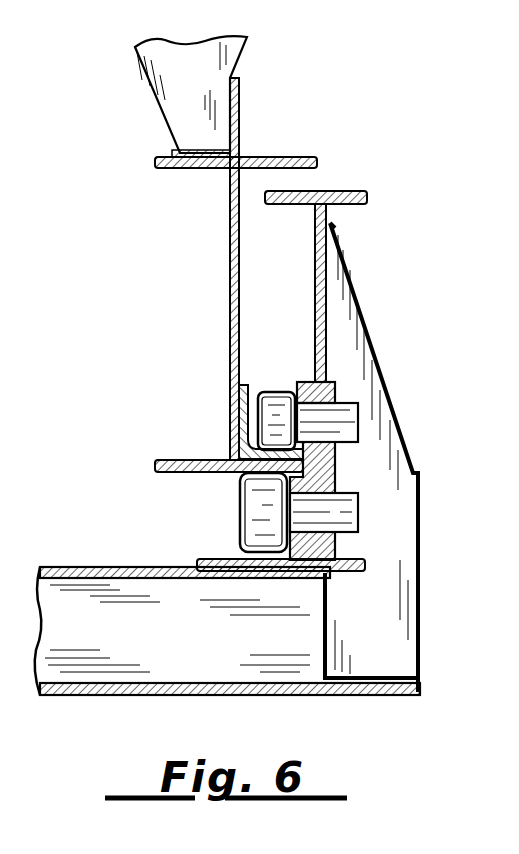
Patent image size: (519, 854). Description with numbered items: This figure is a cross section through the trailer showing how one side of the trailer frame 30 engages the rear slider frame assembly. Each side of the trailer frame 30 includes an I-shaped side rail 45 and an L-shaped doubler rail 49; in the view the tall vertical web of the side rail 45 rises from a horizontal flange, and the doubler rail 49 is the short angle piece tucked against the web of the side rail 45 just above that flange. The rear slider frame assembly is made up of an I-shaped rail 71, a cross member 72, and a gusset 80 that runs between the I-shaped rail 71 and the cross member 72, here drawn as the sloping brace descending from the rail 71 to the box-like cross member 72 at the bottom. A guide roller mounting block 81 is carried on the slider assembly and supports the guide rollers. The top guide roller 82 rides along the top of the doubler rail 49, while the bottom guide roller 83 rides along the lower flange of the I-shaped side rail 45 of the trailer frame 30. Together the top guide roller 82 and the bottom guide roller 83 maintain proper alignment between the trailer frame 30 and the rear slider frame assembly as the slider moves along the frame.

The trailer frame 30 is at (200, 213).
The I-shaped side rail 45 is at (230, 319).
The L-shaped doubler rail 49 is at (238, 395).
The I-shaped rail 71 is at (327, 277).
The guide roller mounting block 81 is at (337, 466).
The top guide roller 82 is at (300, 425).
The bottom guide roller 83 is at (342, 515).
The cross member 72 is at (227, 631).
The gusset 80 is at (308, 457).